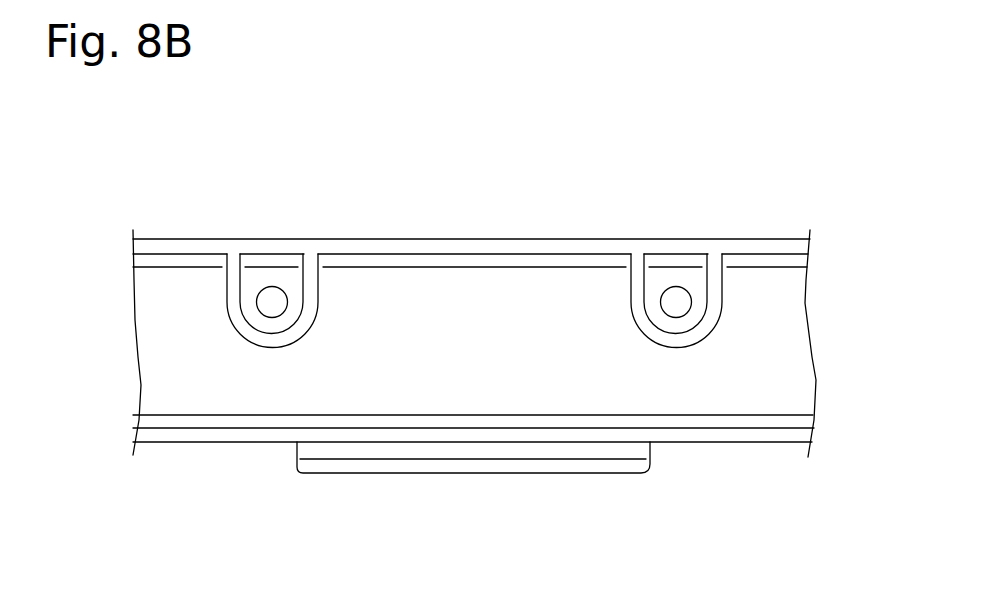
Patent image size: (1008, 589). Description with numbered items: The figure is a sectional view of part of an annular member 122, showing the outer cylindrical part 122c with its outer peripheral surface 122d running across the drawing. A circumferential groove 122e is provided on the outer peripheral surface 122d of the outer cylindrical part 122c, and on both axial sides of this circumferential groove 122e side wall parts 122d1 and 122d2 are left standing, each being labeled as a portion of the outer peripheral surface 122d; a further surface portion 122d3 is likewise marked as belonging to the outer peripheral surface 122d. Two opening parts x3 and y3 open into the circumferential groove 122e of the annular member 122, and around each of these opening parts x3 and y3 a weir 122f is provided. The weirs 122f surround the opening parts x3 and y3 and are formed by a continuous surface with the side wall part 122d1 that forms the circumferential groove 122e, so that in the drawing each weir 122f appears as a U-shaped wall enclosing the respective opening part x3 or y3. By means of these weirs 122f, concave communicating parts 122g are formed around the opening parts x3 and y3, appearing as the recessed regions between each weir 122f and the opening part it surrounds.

The annular member 122 is at (101, 199).
The outer peripheral surface 122d is at (472, 343).
The side wall part 122d1 is at (670, 252).
The side wall part 122d2 is at (258, 442).
The third surface (groove wall) 122d3 is at (637, 300).
The weir 122f is at (320, 298).
The concave communicating part 122g is at (252, 311).
The opening part x3 is at (274, 286).
The opening part y3 is at (677, 286).
The circumferential groove 122e is at (508, 380).
The outer cylindrical part 122c is at (742, 452).